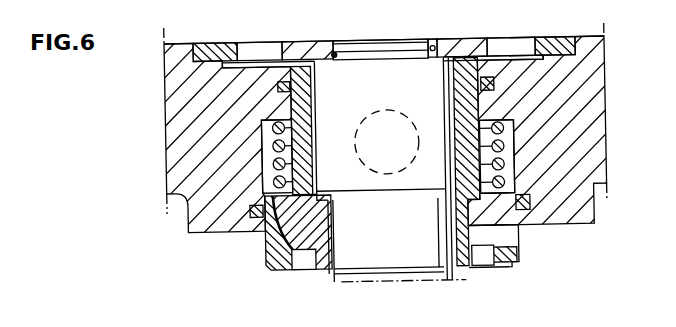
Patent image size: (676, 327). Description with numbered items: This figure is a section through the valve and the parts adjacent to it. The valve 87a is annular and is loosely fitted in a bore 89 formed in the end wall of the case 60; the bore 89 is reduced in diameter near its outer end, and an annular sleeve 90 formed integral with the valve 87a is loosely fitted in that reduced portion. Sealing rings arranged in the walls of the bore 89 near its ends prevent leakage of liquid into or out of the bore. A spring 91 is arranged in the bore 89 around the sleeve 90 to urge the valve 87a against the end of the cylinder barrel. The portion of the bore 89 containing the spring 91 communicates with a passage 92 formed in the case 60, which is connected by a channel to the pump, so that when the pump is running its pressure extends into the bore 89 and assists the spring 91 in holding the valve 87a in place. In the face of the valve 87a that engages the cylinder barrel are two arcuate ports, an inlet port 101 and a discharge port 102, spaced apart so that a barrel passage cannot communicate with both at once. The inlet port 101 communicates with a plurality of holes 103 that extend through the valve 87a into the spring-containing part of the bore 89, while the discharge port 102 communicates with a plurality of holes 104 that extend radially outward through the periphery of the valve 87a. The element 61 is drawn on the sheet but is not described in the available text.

The case 60 is at (174, 133).
The cover plate 61 is at (377, 59).
The bore 89 is at (507, 169).
The annular sleeve 90 is at (304, 87).
The spring 91 is at (283, 130).
The passage 92 is at (385, 115).
The valve 87a is at (322, 229).
The inlet port 101 is at (300, 266).
The discharge port 102 is at (483, 268).
The holes 103 is at (293, 234).
The holes 104 is at (505, 245).